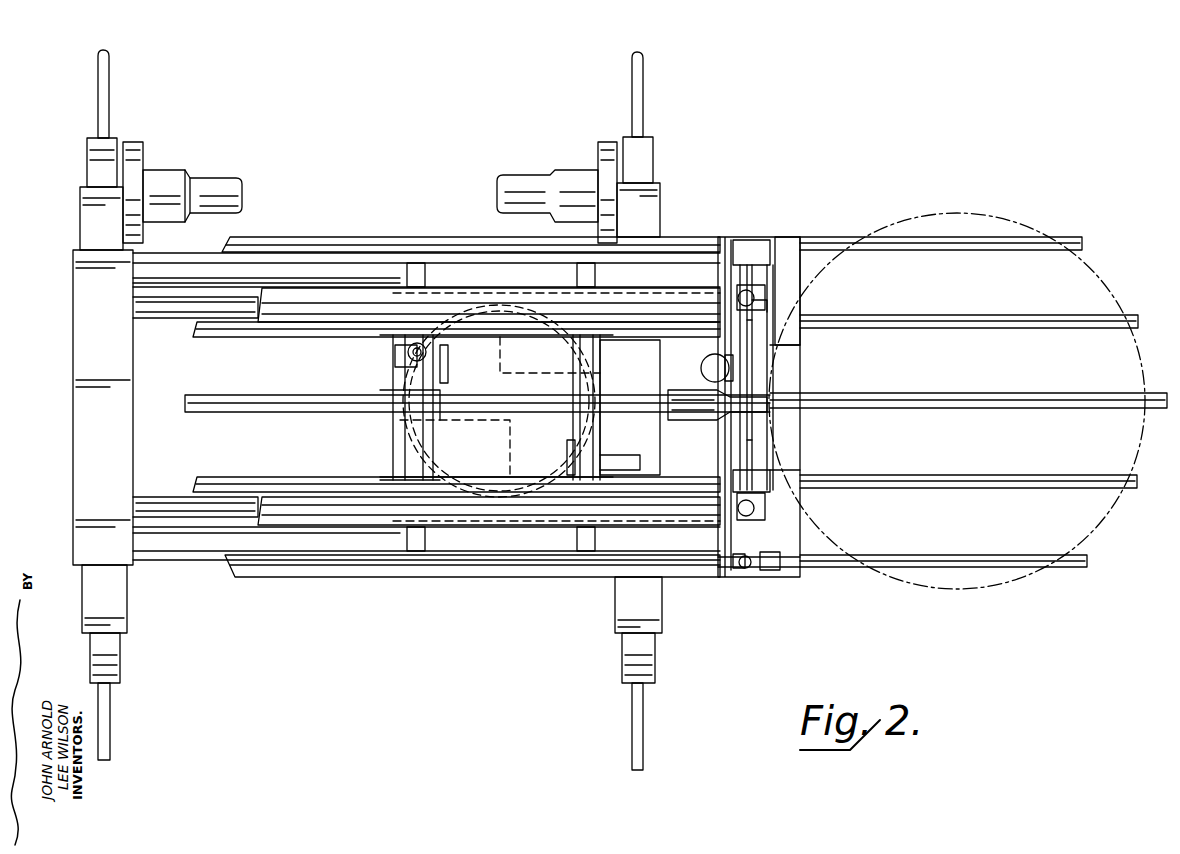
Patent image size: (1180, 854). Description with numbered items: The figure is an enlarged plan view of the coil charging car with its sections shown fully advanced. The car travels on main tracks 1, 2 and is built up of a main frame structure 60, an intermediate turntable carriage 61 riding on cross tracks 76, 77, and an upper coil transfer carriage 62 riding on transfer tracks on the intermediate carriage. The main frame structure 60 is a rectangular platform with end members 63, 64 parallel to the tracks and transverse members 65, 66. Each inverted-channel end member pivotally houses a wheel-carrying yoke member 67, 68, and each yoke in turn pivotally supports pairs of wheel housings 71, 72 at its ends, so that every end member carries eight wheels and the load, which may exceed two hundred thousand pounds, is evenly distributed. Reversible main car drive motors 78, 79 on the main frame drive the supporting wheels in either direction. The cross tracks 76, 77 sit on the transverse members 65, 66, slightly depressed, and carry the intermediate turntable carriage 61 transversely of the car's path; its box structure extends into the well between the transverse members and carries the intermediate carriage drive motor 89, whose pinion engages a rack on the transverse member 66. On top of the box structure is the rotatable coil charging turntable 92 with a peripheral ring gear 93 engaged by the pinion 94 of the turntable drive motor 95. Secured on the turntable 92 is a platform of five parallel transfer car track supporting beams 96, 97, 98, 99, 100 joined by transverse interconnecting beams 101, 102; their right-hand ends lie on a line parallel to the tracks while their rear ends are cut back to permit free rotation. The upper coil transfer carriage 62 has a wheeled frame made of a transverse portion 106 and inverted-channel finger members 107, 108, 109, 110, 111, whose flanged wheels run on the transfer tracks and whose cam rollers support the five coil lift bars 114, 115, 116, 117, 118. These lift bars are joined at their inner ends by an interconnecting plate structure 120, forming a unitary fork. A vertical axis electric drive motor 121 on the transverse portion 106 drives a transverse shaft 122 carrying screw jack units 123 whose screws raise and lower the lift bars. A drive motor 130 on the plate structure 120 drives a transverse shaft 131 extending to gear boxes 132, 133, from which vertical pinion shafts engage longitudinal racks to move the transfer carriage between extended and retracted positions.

The main track 1 is at (109, 90).
The main track 2 is at (643, 85).
The main frame structure 60 is at (73, 460).
The intermediate turntable carriage 61 is at (185, 410).
The upper coil transfer carriage 62 is at (746, 242).
The end member 63 is at (118, 368).
The end member 64 is at (655, 350).
The transverse member 65 is at (160, 262).
The transverse member 66 is at (183, 560).
The yoke member 67 is at (120, 600).
The yoke member 68 is at (80, 212).
The wheel housing 71 is at (112, 656).
The wheel housing 72 is at (87, 165).
The cross track 76 is at (180, 500).
The cross track 77 is at (190, 305).
The main car drive motor 78 is at (180, 175).
The main car drive motor 79 is at (572, 175).
The intermediate carriage drive motor 89 is at (618, 465).
The coil charging turntable 92 is at (435, 438).
The ring gear 93 is at (420, 430).
The pinion 94 is at (410, 357).
The turntable drive motor 95 is at (412, 348).
The transfer car track supporting beam 96 is at (270, 246).
The transfer car track supporting beam 97 is at (205, 340).
The transfer car track supporting beam 98 is at (222, 412).
The transfer car track supporting beam 99 is at (240, 477).
The transfer car track supporting beam 100 is at (250, 578).
The transverse interconnecting beam 101 is at (425, 274).
The transverse interconnecting beam 102 is at (577, 274).
The transverse portion 106 is at (790, 290).
The finger member 107 is at (1080, 240).
The finger member 108 is at (1010, 315).
The finger member 109 is at (1010, 393).
The finger member 110 is at (1010, 475).
The finger member 111 is at (955, 555).
The coil lift bar 114 is at (1084, 243).
The coil lift bar 115 is at (1140, 322).
The coil lift bar 116 is at (1140, 385).
The coil lift bar 117 is at (1140, 465).
The coil lift bar 118 is at (1085, 565).
The interconnecting plate structure 120 is at (760, 275).
The vertical axis electric drive motor 121 is at (702, 368).
The transverse shaft 122 is at (815, 465).
The screw jack unit 123 is at (740, 568).
The drive motor 130 is at (682, 420).
The transverse shaft 131 is at (750, 335).
The gear box 132 is at (770, 312).
The gear box 133 is at (765, 530).